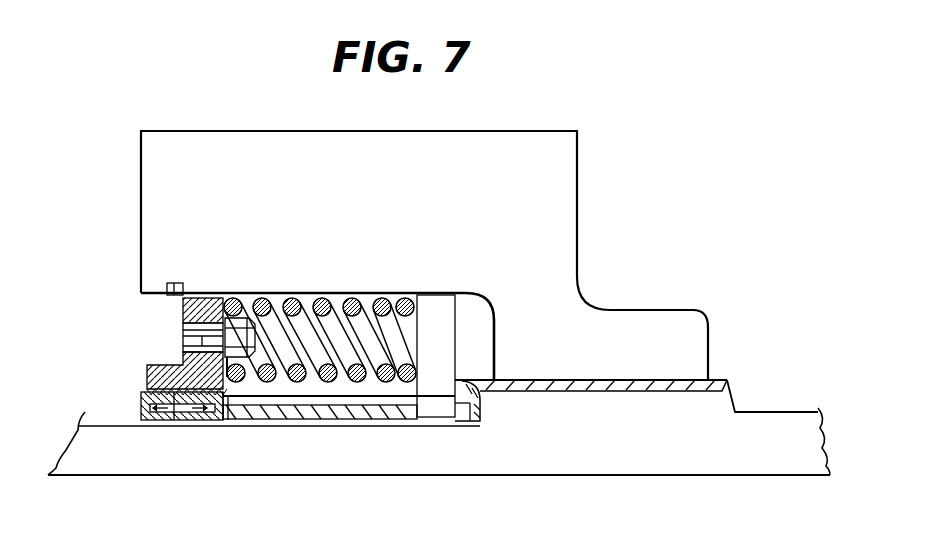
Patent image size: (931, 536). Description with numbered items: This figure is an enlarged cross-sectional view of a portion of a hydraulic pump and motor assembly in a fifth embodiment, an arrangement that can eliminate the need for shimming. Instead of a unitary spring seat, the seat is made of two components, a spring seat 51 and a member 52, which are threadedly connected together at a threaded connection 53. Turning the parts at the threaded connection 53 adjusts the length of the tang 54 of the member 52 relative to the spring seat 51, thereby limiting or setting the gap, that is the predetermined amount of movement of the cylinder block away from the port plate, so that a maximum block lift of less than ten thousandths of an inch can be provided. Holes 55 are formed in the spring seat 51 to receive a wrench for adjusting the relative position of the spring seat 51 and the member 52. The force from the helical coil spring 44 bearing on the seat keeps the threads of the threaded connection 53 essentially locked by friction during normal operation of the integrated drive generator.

The helical coil spring 44 is at (384, 362).
The spring seat 51 is at (147, 370).
The member 52 is at (226, 416).
The threaded connection 53 is at (173, 420).
The tang 54 is at (350, 416).
The holes 55 is at (183, 330).